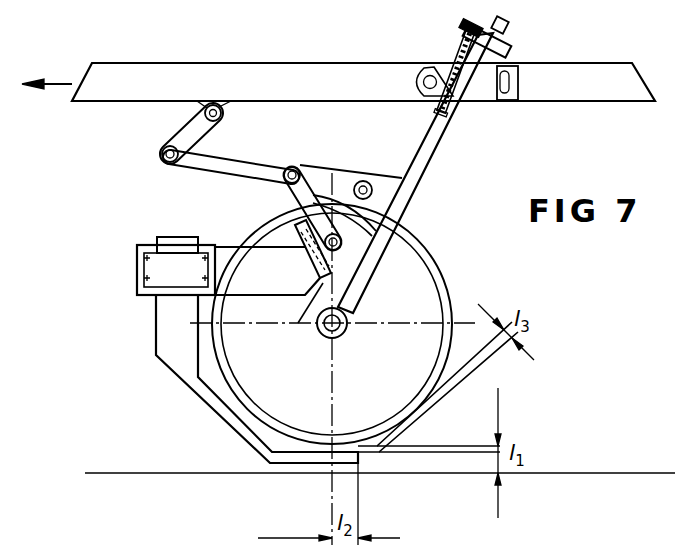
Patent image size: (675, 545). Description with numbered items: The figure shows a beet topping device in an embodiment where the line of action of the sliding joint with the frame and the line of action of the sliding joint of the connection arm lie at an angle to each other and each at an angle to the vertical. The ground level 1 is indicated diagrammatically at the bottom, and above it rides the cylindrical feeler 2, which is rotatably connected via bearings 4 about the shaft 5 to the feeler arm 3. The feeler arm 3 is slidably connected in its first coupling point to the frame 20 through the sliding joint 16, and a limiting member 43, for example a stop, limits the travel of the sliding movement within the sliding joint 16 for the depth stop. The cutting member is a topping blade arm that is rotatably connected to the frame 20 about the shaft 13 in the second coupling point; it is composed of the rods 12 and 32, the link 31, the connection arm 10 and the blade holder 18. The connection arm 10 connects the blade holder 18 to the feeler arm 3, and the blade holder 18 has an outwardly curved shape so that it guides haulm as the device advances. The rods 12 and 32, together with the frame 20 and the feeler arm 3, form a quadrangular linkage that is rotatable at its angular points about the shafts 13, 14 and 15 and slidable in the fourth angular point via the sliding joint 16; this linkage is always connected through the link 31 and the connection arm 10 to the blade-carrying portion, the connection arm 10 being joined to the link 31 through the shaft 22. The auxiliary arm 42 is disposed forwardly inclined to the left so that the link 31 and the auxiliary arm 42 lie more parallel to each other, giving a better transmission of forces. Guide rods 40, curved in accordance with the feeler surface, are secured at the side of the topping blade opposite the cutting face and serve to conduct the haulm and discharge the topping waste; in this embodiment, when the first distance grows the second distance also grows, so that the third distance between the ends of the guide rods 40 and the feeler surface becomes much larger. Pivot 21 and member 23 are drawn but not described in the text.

The ground level 1 is at (157, 473).
The feeler 2 is at (430, 295).
The feeler arm 3 is at (431, 160).
The bearings 4 is at (330, 342).
The shaft 5 is at (345, 333).
The connection arm 10 is at (258, 283).
The rod 12 is at (185, 142).
The shaft 13 is at (222, 114).
The shaft 14 is at (162, 154).
The shaft 15 is at (362, 181).
The sliding joint 16 is at (450, 78).
The blade holder 18 is at (200, 387).
The frame 20 is at (212, 73).
The pivot joint 21 is at (296, 168).
The shaft 22 is at (395, 234).
The connecting link 23 is at (345, 257).
The link 31 is at (308, 203).
The rod 32 is at (216, 165).
The guide rods 40 is at (407, 450).
The auxiliary arm 42 is at (312, 325).
The limiting member 43 is at (517, 45).